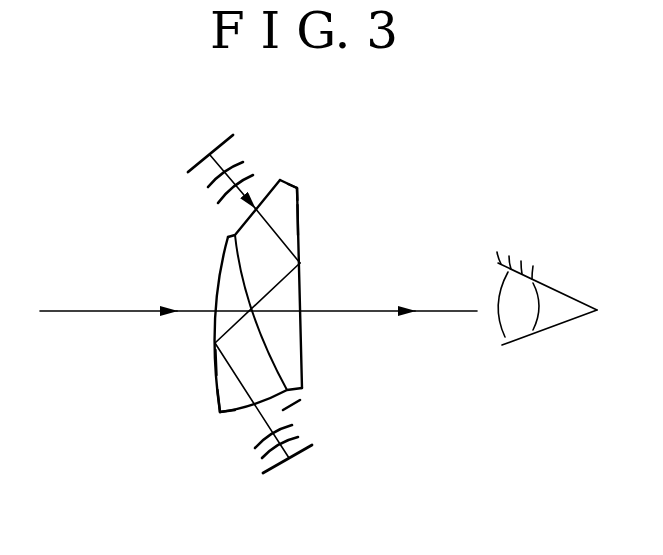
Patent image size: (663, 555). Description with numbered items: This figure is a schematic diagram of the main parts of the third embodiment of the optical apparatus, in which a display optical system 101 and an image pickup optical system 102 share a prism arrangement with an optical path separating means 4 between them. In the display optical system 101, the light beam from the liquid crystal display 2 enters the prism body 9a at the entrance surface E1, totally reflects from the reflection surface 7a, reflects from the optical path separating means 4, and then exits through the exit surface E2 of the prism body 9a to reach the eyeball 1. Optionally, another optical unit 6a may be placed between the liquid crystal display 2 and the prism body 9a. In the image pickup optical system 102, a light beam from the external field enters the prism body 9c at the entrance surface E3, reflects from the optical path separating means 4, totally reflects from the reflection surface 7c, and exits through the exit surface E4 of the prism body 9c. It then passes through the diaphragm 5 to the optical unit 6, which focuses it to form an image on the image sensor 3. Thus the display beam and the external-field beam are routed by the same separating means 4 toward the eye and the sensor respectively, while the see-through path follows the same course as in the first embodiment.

The eyeball 1 is at (547, 332).
The liquid crystal display (LCD) 2 is at (220, 143).
The image sensor (CCD) 3 is at (312, 450).
The optical path separating means 4 is at (205, 311).
The diaphragm 5 is at (238, 433).
The optical unit 6 is at (290, 428).
The optical unit 6a is at (215, 193).
The reflection surface 7a is at (302, 221).
The reflection surface 7c is at (215, 362).
The prism body 9a is at (295, 188).
The prism body 9c is at (220, 398).
The display optical system 101 is at (297, 315).
The image pickup optical system 102 is at (190, 338).
The entrance surface E1 is at (270, 190).
The exit surface E2 is at (302, 328).
The entrance surface E3 is at (214, 297).
The exit surface E4 is at (245, 406).